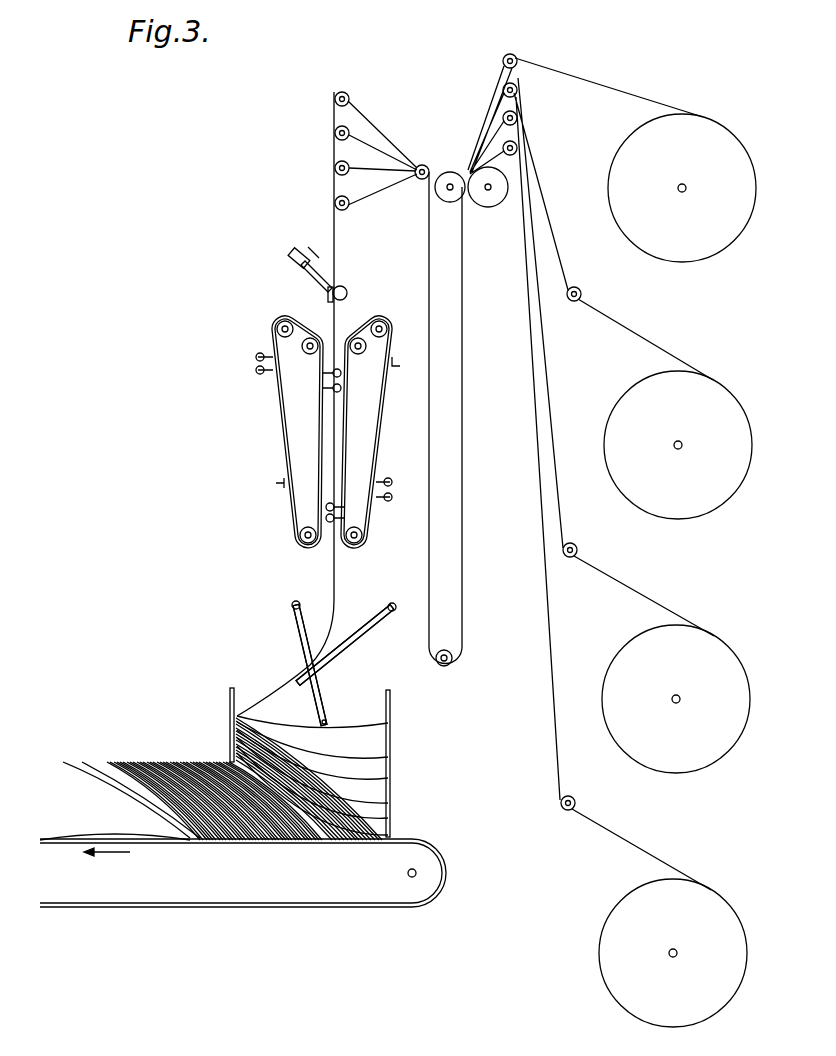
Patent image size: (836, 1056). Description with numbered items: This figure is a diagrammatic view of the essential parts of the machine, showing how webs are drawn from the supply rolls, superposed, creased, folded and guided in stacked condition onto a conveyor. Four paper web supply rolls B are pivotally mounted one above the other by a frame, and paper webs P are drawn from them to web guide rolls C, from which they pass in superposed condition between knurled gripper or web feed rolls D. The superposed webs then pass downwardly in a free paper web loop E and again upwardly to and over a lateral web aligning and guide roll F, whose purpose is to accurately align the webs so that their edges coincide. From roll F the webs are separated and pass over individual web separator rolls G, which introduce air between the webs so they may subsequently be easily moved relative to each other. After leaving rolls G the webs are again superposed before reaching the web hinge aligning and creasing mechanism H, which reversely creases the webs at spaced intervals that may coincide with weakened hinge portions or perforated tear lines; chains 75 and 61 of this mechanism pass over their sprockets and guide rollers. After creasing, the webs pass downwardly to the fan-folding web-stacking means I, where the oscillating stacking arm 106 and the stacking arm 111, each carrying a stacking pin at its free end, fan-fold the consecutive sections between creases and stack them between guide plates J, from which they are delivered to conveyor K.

The paper web supply rolls B is at (717, 133).
The paper webs P is at (624, 88).
The web guide rolls C is at (517, 60).
The gripper or web feed rolls D is at (453, 197).
The free paper web loop E is at (462, 508).
The lateral web aligning and guide roll F is at (427, 165).
The web separator rolls G is at (335, 204).
The web hinge aligning and creasing mechanism H is at (274, 321).
The chain 75 is at (283, 428).
The chain 61 is at (385, 428).
The fan-folding web-stacking means I is at (288, 641).
The oscillating stacking arm 106 is at (318, 700).
The stacking arm 111 is at (358, 636).
The guide plates J is at (224, 715).
The conveyor K is at (150, 909).